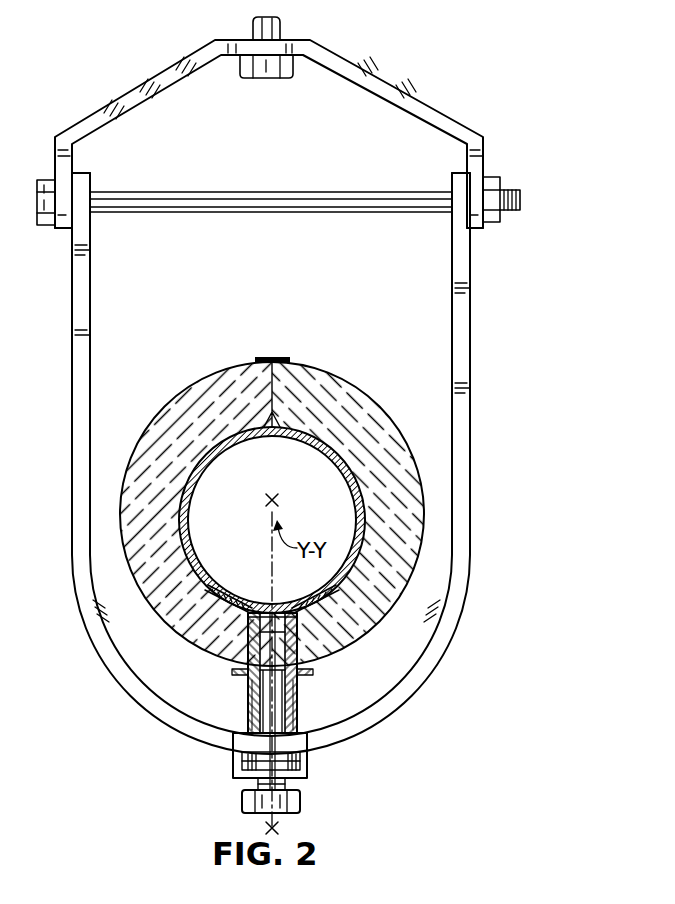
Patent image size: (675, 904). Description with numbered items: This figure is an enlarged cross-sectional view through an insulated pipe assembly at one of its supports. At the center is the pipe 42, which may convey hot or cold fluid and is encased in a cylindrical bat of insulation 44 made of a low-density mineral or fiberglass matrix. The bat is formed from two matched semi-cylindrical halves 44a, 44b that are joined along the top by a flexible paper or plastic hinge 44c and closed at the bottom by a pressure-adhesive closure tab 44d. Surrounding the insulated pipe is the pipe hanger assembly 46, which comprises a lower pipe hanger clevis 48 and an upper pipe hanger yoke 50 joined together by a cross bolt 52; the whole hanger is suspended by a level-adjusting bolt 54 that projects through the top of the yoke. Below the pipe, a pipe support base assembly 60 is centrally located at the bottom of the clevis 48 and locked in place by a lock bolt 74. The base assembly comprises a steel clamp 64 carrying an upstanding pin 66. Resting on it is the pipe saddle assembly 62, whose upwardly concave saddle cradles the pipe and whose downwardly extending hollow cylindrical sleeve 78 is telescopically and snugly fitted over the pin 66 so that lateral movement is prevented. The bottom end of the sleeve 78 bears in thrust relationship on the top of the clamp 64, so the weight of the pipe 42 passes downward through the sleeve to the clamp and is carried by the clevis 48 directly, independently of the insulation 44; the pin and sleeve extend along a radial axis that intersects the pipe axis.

The pipe 42 is at (318, 437).
The insulation bats 44 is at (263, 482).
The semi-cylindrical half 44a is at (170, 425).
The semi-cylindrical half 44b is at (333, 403).
The hinge 44c is at (280, 358).
The pressure-adhesive closure tab 44d is at (232, 672).
The pipe hanger assembly 46 is at (312, 385).
The lower pipe hanger clevis 48 is at (463, 343).
The upper pipe hanger yoke 50 is at (165, 76).
The cross bolt 52 is at (218, 200).
The level-adjusting bolt 54 is at (267, 60).
The pipe support base assembly 60 is at (274, 764).
The pipe saddle assembly 62 is at (300, 639).
The clamp 64 is at (235, 760).
The upstanding pin 66 is at (273, 693).
The lock bolt 74 is at (300, 800).
The hollow cylindrical sleeve 78 is at (248, 703).